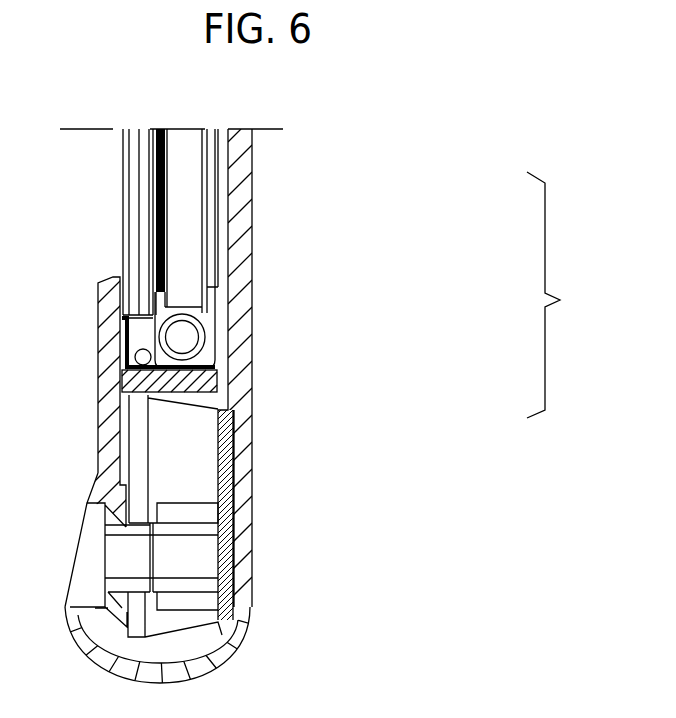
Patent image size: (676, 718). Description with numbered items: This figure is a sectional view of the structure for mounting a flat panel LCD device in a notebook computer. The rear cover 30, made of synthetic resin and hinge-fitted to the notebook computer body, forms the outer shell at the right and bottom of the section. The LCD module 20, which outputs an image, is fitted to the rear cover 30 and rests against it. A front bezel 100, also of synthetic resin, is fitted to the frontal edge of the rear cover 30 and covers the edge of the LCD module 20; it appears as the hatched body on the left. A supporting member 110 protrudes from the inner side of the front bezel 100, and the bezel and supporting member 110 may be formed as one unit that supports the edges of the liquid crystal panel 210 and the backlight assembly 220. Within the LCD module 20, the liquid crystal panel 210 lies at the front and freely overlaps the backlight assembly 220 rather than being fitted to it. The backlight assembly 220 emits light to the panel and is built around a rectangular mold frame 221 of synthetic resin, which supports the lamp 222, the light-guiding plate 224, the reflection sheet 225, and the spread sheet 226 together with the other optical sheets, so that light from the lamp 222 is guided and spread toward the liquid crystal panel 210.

The LCD module 20 is at (112, 208).
The rear cover 30 is at (237, 490).
The front bezel 100 is at (110, 338).
The supporting member 110 is at (172, 383).
The liquid crystal panel 210 is at (145, 175).
The backlight assembly 220 is at (572, 295).
The mold frame 221 is at (213, 348).
The lamp 222 is at (190, 335).
The light-guiding plate 224 is at (190, 255).
The reflection sheet 225 is at (205, 197).
The spread sheet 226 is at (185, 145).